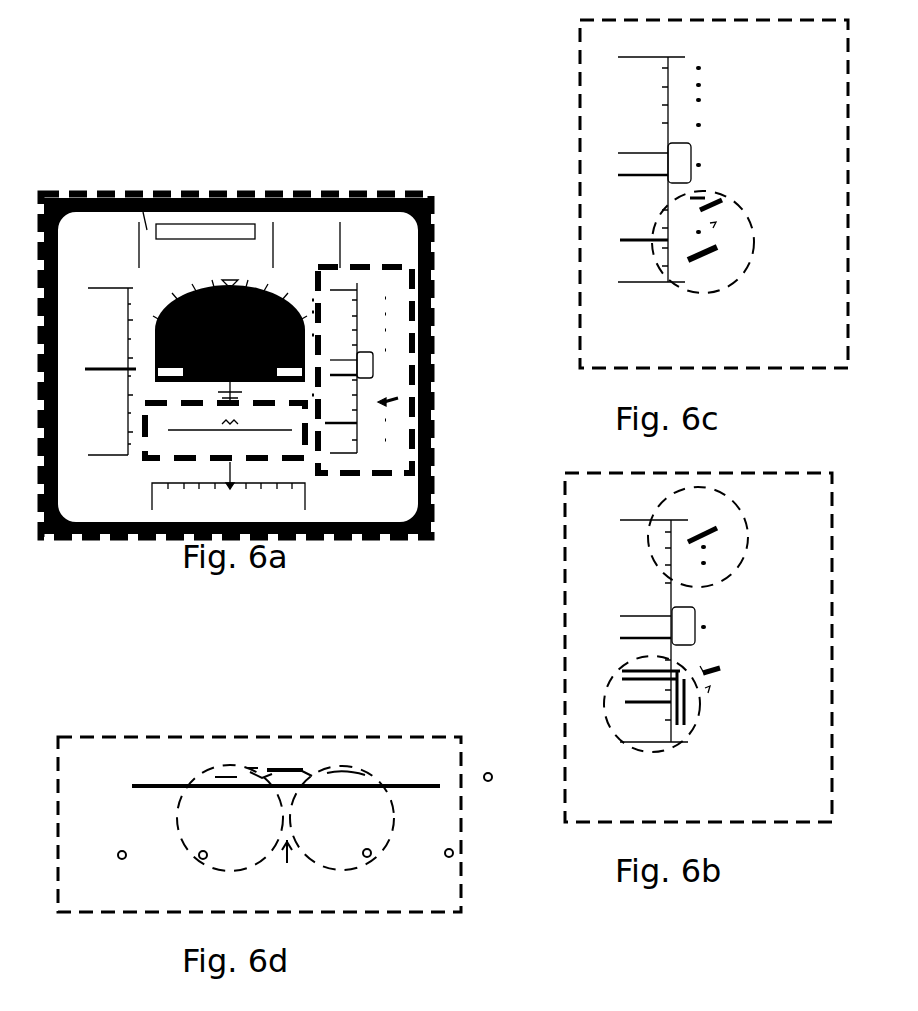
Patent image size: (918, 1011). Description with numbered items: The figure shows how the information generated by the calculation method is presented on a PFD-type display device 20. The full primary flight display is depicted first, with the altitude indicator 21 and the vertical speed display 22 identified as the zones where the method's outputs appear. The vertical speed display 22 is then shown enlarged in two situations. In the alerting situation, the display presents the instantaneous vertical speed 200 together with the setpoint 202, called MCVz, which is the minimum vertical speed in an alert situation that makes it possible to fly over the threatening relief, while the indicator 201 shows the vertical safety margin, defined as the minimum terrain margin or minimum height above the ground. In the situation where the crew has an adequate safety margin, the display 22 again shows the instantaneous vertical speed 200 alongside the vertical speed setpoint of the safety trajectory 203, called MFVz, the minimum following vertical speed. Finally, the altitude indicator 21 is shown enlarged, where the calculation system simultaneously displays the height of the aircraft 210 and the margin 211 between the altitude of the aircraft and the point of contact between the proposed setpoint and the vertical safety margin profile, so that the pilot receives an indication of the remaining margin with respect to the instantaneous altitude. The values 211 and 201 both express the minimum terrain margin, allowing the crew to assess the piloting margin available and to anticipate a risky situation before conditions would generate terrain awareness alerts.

In FIG. 6A, the PFD-type display device 20 is at (117, 196).
In FIG. 6A, the altitude indicator 21 is at (187, 438).
In FIG. 6D, the altitude indicator 21 is at (130, 750).
In FIG. 6A, the display 22 is at (392, 327).
In FIG. 6C, the display 22 is at (593, 105).
In FIG. 6B, the display 22 is at (595, 523).
In FIG. 6A, the instantaneous vertical speed 200 is at (417, 397).
In FIG. 6C, the instantaneous vertical speed 200 is at (722, 200).
In FIG. 6B, the instantaneous vertical speed 200 is at (717, 670).
In FIG. 6B, the vertical safety margin 201 is at (690, 712).
In FIG. 6B, the setpoint MCVz 202 is at (717, 528).
In FIG. 6C, the vertical speed setpoint of the safety trajectory 203 is at (703, 263).
In FIG. 6D, the height of the aircraft 210 is at (234, 782).
In FIG. 6D, the margin 211 is at (357, 782).